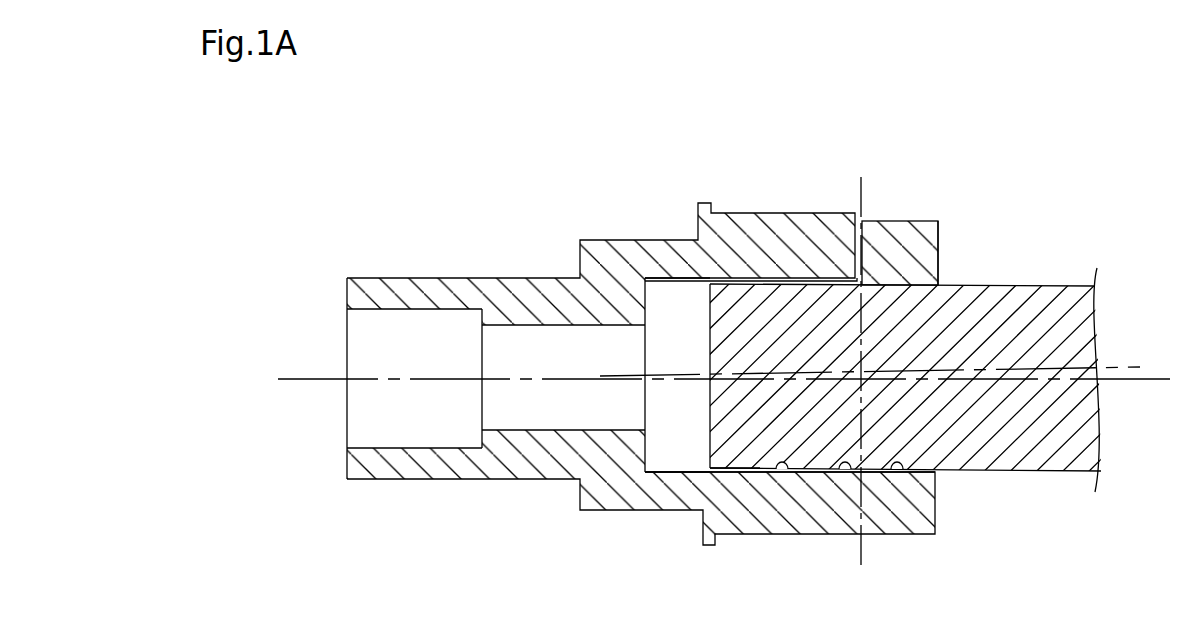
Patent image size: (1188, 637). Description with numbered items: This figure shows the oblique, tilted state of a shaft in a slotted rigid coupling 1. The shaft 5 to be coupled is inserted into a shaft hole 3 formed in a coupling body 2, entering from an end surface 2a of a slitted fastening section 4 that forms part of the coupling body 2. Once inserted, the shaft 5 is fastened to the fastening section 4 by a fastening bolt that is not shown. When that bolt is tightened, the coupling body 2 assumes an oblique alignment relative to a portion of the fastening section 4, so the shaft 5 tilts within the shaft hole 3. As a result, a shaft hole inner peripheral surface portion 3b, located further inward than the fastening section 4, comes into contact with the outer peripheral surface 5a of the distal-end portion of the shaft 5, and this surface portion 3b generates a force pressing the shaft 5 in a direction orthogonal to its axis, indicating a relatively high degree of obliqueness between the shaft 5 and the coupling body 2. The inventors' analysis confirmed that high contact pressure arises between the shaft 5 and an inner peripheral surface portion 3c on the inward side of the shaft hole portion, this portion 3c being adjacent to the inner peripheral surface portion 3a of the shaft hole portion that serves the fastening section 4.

The rigid coupling 1 is at (781, 167).
The coupling body 2 is at (647, 237).
The end surface 2a is at (938, 238).
The shaft hole 3 is at (677, 450).
The inner peripheral surface portion 3a is at (896, 472).
The shaft hole inner peripheral surface portion 3b is at (782, 472).
The inner peripheral surface portion 3c is at (840, 472).
The fastening section 4 is at (915, 218).
The shaft 5 is at (1009, 483).
The outer peripheral surface 5a is at (737, 468).